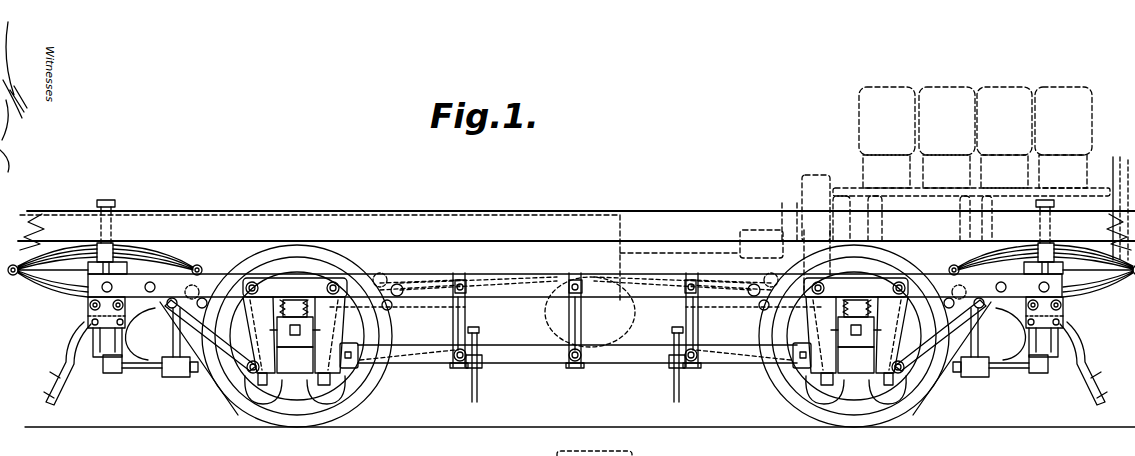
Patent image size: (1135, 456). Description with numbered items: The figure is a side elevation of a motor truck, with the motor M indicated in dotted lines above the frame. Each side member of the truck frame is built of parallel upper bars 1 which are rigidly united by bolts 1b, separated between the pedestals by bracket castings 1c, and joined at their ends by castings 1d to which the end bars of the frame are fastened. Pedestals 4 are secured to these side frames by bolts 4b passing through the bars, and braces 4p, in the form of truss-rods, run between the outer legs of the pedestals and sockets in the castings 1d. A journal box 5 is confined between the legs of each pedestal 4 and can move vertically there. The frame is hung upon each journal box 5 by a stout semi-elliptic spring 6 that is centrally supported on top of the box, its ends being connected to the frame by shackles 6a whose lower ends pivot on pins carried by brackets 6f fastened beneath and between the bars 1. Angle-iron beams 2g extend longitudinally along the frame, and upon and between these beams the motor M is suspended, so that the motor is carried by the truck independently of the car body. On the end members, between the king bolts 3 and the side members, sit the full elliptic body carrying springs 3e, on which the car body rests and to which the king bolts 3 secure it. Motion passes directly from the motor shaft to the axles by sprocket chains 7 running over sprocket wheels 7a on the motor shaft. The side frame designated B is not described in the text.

The upper bar 1 is at (575, 279).
The bolt 1b is at (462, 281).
The bracket casting 1c is at (467, 330).
The end casting 1d is at (90, 317).
The angle-iron beam 2g is at (557, 232).
The king bolt 3 is at (112, 223).
The body carrying spring 3e is at (70, 243).
The pedestal 4 is at (345, 368).
The bolt 4b is at (950, 268).
The brace 4p is at (207, 387).
The journal box 5 is at (300, 355).
The semi-elliptic spring 6 is at (575, 336).
The shackle 6a is at (292, 271).
The bracket 6f is at (177, 308).
The sprocket chain 7 is at (508, 274).
The sprocket wheel 7a is at (575, 312).
The truck side frame B is at (290, 230).
The motor M is at (872, 121).